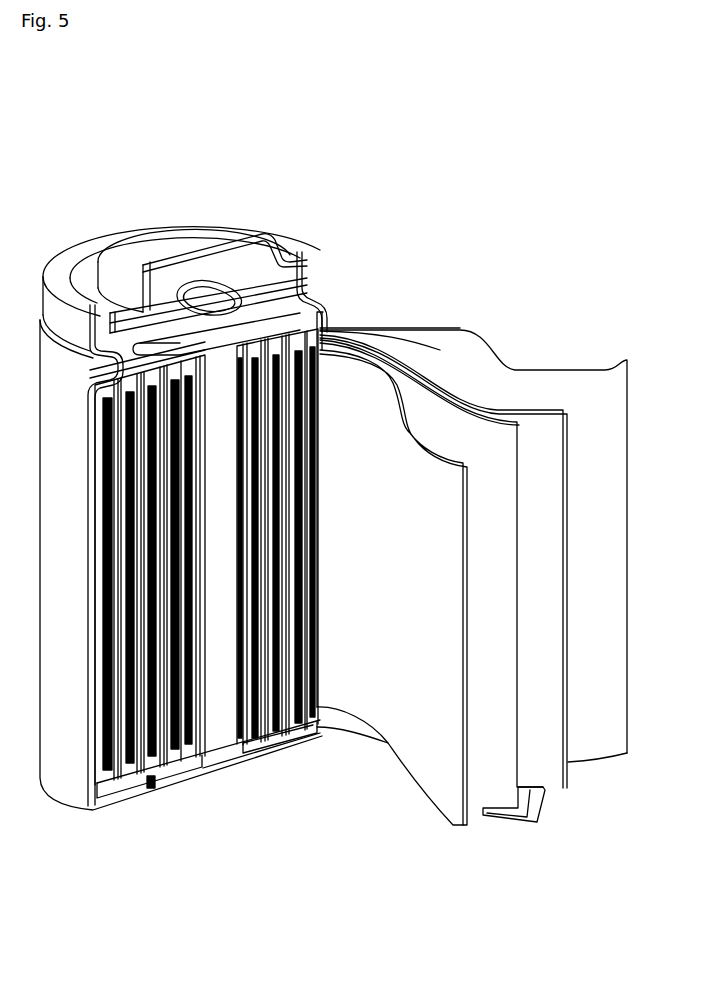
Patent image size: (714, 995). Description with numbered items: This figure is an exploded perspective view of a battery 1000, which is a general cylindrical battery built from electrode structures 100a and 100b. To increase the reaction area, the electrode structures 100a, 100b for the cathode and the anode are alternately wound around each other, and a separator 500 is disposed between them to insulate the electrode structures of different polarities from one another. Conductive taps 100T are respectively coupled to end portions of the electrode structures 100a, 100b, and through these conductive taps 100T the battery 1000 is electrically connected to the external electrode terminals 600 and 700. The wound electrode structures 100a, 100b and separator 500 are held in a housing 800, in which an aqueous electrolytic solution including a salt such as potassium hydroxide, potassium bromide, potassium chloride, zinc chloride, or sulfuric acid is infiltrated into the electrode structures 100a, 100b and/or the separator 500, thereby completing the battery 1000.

The battery 1000 is at (352, 112).
The external electrode terminal 700 is at (195, 245).
The conductive taps 100T is at (330, 330).
The separator 500 is at (490, 490).
The electrode structure 100b is at (535, 600).
The electrode structure 100a is at (415, 720).
The external electrode terminal 600 is at (157, 780).
The housing 800 is at (62, 733).